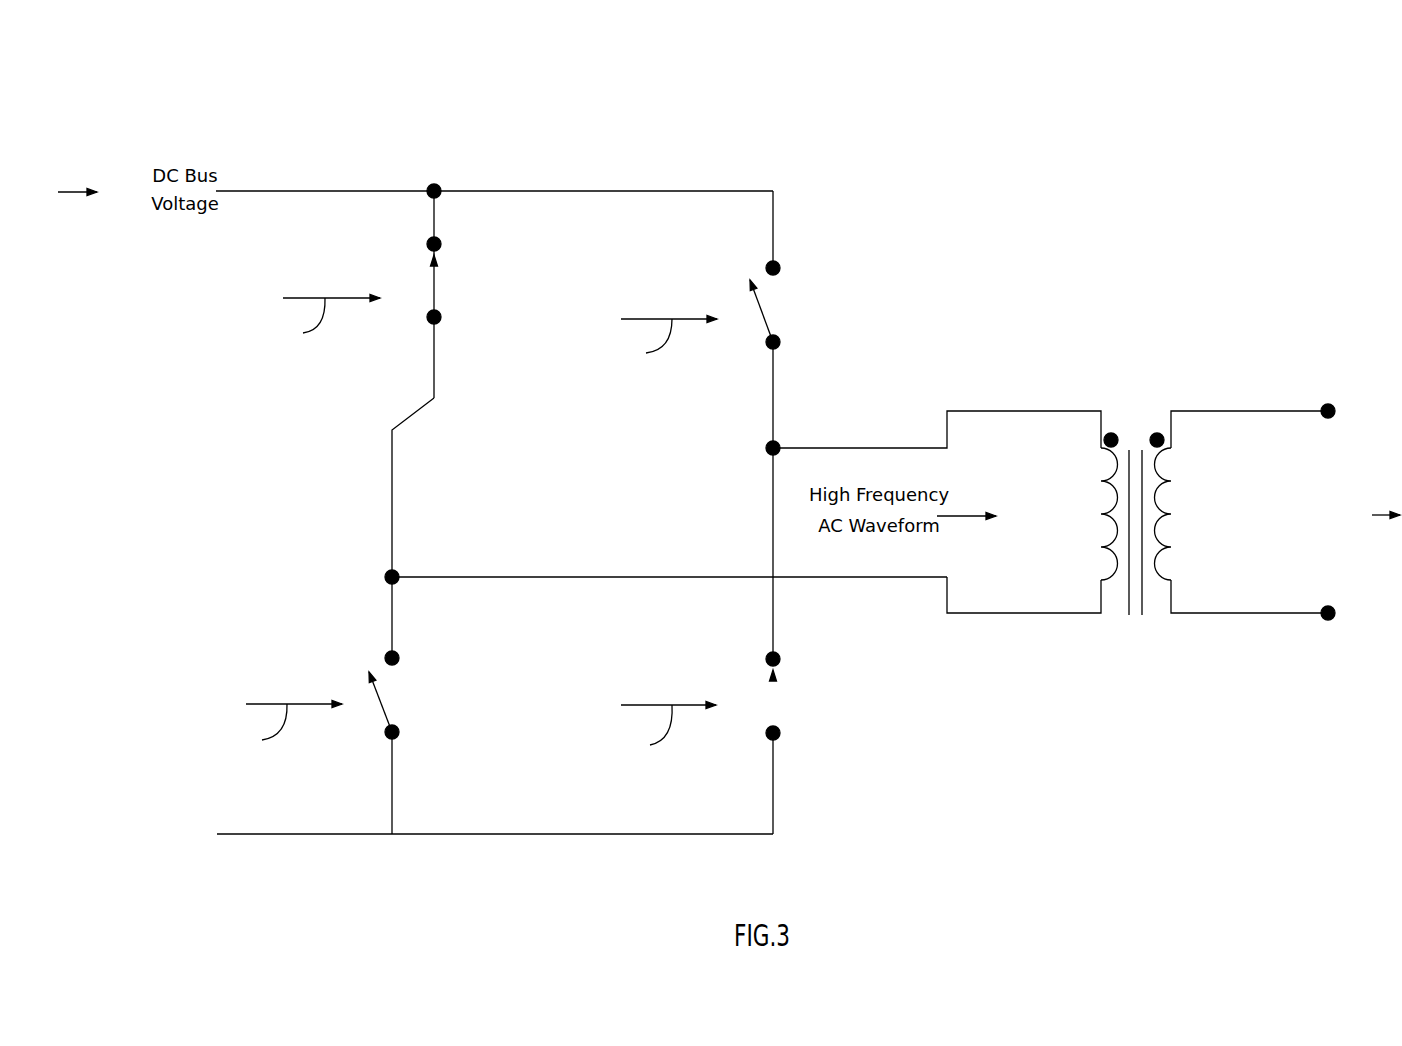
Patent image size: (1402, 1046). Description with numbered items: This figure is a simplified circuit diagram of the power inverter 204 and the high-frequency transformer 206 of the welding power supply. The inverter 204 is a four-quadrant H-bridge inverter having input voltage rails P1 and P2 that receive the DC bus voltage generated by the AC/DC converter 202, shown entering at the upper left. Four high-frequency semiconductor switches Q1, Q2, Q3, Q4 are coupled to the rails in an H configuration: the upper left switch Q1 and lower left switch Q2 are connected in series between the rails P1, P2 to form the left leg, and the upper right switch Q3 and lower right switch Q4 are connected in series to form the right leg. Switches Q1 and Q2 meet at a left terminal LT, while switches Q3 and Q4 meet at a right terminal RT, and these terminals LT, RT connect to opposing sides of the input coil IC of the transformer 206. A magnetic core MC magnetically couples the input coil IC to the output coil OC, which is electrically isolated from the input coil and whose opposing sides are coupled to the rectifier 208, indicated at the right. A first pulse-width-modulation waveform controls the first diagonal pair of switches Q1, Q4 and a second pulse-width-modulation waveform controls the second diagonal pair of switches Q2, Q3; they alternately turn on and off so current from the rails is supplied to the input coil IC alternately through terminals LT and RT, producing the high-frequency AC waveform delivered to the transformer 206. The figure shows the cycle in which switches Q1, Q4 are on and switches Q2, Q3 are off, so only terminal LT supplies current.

The AC/DC converter 202 is at (101, 189).
The power inverter 204 is at (305, 175).
The high-frequency transformer 206 is at (1128, 387).
The rectifier 208 is at (1370, 512).
The input voltage rail P1 is at (568, 191).
The input voltage rail P2 is at (594, 834).
The upper left switch Q1 is at (452, 294).
The lower left switch Q2 is at (420, 697).
The upper right switch Q3 is at (800, 303).
The lower right switch Q4 is at (799, 711).
The left terminal LT is at (396, 570).
The right terminal RT is at (766, 453).
The input coil IC is at (1057, 529).
The output coil OC is at (1170, 529).
The magnetic core MC is at (1133, 620).